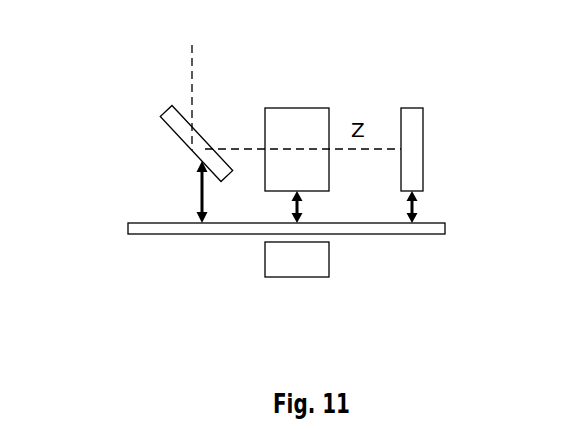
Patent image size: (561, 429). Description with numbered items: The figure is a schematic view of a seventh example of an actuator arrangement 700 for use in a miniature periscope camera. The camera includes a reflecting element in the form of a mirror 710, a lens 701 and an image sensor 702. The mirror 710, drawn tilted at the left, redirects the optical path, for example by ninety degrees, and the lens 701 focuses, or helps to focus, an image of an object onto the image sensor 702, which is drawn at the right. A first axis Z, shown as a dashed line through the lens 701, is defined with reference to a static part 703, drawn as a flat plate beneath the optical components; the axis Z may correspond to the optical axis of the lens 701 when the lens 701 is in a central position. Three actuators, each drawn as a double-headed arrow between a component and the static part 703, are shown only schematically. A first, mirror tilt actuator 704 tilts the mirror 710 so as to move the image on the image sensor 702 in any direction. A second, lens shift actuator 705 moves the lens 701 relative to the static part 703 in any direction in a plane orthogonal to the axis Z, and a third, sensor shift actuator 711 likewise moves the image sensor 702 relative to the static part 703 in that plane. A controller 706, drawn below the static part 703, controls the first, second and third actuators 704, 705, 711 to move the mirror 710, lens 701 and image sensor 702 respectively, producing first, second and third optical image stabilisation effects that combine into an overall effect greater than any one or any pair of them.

The actuator arrangement 700 is at (104, 129).
The lens 701 is at (329, 118).
The image sensor 702 is at (424, 118).
The static part 703 is at (437, 222).
The first actuator 704 is at (197, 205).
The second actuator 705 is at (291, 205).
The controller 706 is at (265, 248).
The mirror 710 is at (163, 117).
The third actuator 711 is at (406, 201).